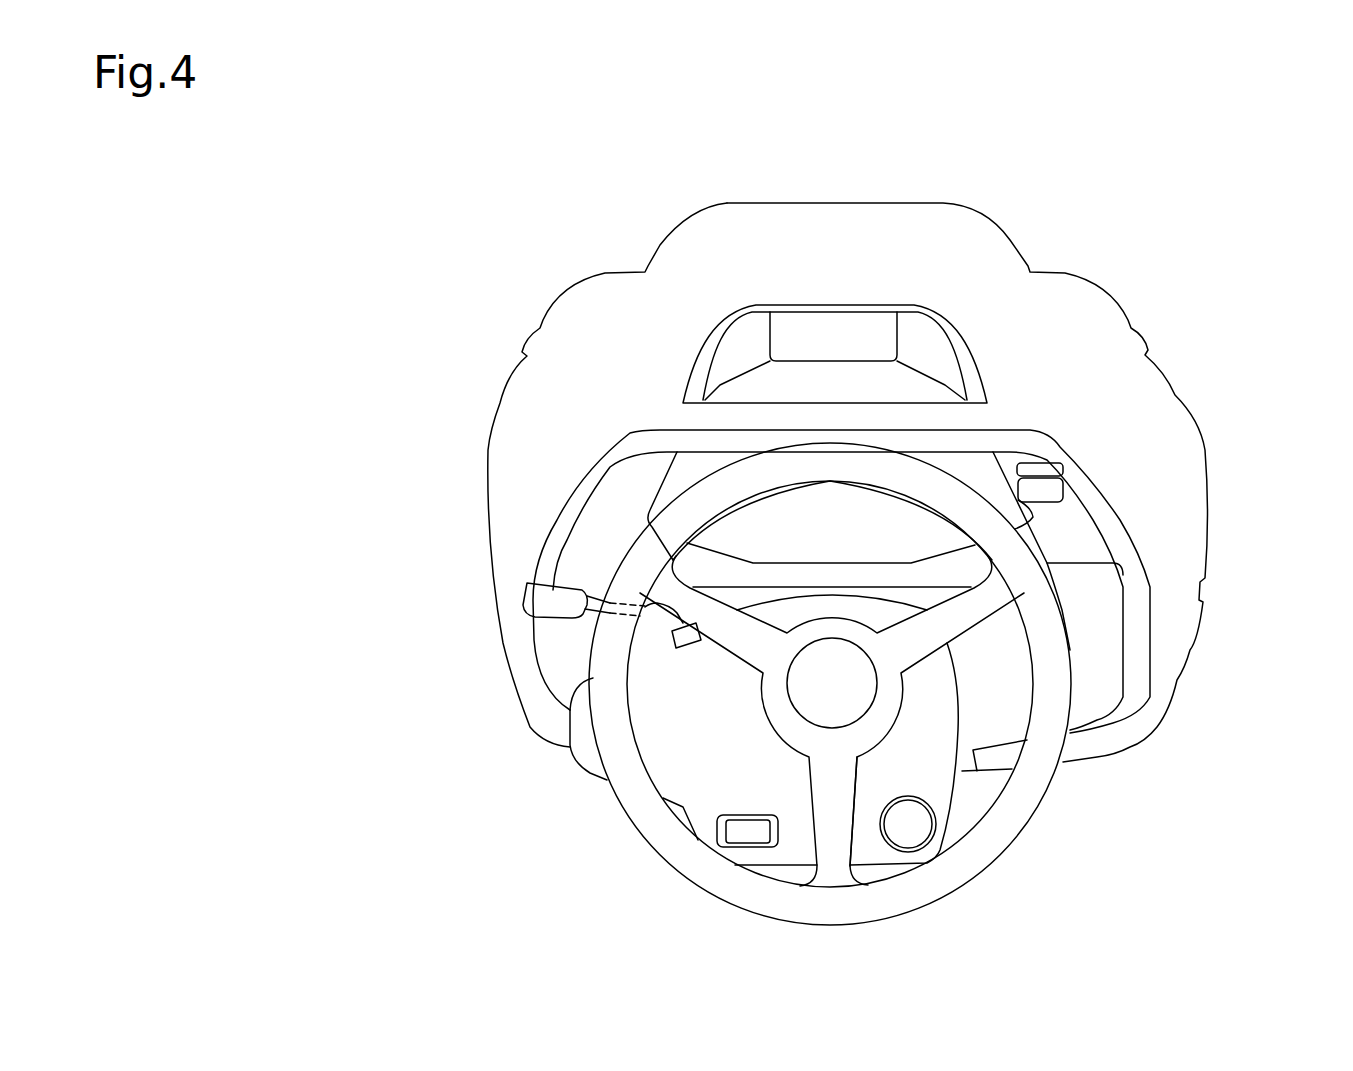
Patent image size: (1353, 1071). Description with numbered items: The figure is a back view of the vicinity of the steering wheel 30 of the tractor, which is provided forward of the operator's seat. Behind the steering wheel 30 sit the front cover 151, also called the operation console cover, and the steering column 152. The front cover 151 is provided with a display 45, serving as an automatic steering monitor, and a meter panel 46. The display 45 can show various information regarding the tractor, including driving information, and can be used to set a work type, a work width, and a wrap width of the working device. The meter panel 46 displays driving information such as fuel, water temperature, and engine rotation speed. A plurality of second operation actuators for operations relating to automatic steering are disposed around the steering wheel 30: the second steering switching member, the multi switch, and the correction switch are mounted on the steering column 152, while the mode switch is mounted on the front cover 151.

The steering wheel 30 is at (1058, 653).
The display 45 is at (840, 320).
The meter panel 46 is at (893, 520).
The front cover 151 is at (1103, 307).
The steering column 152 is at (930, 773).